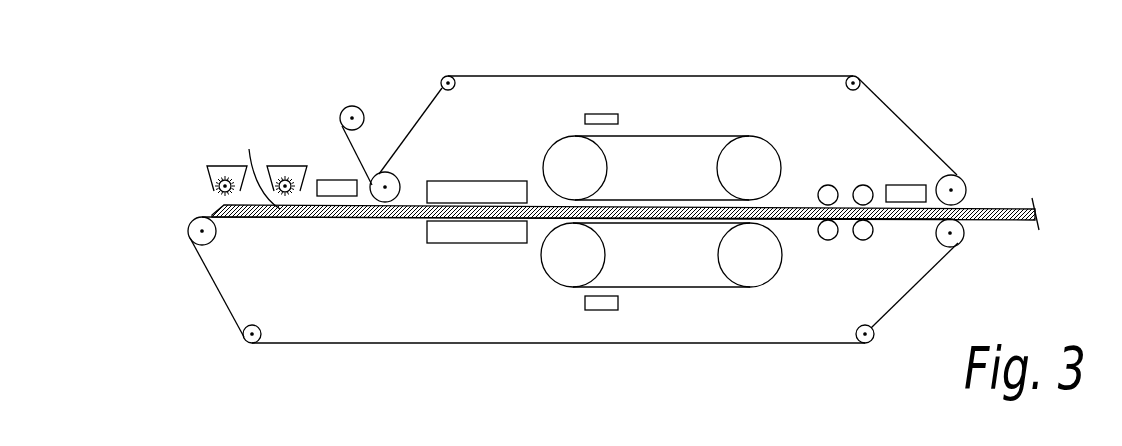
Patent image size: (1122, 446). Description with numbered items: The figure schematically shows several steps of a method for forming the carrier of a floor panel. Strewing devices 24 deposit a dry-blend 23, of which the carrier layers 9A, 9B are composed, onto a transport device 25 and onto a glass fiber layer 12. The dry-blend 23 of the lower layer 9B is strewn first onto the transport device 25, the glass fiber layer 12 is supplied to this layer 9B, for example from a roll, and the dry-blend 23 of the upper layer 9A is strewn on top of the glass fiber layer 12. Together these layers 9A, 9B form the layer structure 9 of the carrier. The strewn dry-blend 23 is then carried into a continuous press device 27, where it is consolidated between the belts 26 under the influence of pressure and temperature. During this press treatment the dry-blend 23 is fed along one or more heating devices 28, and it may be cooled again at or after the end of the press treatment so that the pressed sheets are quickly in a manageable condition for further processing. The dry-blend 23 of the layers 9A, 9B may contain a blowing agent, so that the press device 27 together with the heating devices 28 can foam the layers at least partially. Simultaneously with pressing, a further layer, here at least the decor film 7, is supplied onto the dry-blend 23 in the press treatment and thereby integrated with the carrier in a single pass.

The continuous press device 27 is at (706, 119).
The transport device 25 is at (261, 214).
The dry-blend 23 is at (303, 216).
The belts 26 is at (664, 203).
The strewing devices 24 is at (217, 158).
The glass fiber layer 12 is at (247, 150).
The decor film 7 is at (355, 156).
The layer 9A is at (390, 213).
The layer 9B is at (410, 216).
The heating devices 28 is at (325, 186).
The composite sheet 9 is at (982, 218).